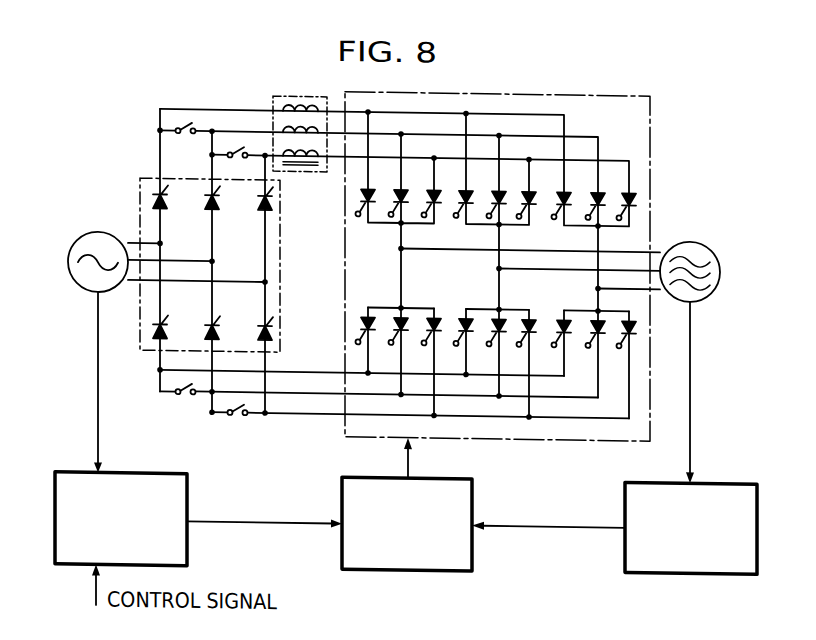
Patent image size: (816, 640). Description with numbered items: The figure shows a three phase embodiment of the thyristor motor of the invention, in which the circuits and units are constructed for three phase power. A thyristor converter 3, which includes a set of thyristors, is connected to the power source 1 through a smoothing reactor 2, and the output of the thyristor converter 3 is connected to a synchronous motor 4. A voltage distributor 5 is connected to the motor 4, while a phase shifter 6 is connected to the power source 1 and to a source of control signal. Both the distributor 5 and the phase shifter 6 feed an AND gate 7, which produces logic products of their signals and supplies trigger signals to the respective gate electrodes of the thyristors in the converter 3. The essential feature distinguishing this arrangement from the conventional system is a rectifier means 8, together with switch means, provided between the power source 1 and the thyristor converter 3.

The power source 1 is at (101, 231).
The smoothing reactor 2 is at (308, 92).
The thyristor converter 3 is at (486, 87).
The synchronous motor 4 is at (689, 232).
The voltage distributor 5 is at (714, 473).
The phase shifter 6 is at (136, 471).
The AND gate 7 is at (431, 472).
The rectifier means 8 is at (138, 210).